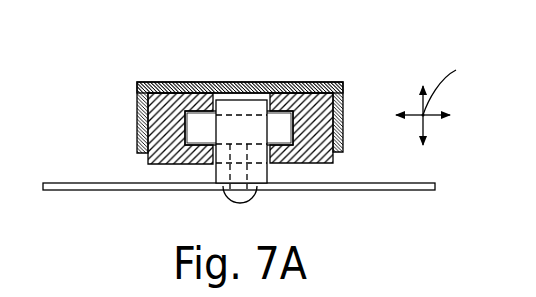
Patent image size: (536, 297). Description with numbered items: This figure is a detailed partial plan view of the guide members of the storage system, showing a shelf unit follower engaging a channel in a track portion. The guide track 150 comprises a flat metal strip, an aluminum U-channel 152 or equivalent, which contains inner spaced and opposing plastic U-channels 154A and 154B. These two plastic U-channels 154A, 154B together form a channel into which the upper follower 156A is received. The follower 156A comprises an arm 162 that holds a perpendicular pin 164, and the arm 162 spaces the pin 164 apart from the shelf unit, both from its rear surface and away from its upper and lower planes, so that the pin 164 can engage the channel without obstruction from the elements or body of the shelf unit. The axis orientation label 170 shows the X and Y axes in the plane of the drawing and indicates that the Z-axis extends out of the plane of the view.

The guide track 150 is at (133, 99).
The aluminum U-channel 152 is at (312, 82).
The plastic U-channel 154A is at (168, 174).
The plastic U-channel 154B is at (293, 165).
The upper follower 156A is at (238, 92).
The arm 162 is at (215, 175).
The pin 164 is at (277, 131).
The axis orientation label 170 is at (408, 98).